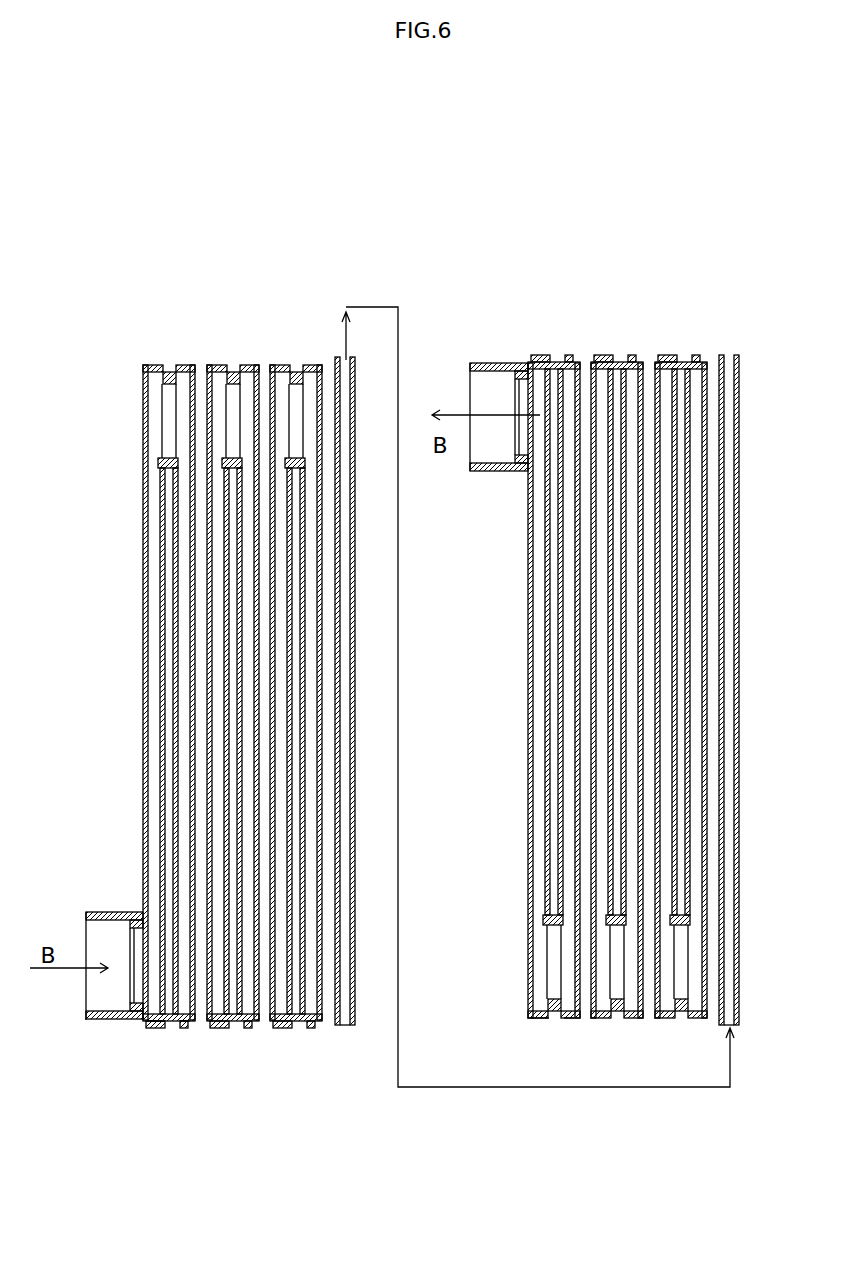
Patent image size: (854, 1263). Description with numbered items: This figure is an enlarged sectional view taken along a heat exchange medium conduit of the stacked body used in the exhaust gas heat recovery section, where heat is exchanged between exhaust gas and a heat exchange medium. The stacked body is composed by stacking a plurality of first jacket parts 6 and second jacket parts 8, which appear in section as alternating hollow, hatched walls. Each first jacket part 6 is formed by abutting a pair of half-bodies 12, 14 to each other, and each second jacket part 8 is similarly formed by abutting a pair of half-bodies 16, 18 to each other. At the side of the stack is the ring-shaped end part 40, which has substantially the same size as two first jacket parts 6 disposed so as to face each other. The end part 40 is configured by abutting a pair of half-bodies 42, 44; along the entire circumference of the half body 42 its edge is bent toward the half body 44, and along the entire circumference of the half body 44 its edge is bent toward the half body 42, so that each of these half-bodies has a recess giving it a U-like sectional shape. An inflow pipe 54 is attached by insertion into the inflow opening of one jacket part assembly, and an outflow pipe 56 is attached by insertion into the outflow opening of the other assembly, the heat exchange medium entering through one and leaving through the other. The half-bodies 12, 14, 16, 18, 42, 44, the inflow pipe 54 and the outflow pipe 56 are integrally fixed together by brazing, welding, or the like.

The first jacket part 6 is at (156, 1042).
The second jacket part 8 is at (201, 1039).
The half-body 12 is at (145, 363).
The half-body 14 is at (167, 363).
The half-body 16 is at (188, 365).
The half-body 18 is at (196, 368).
The end part 40 is at (350, 1042).
The half-body 42 is at (334, 355).
The half-body 44 is at (368, 365).
The inflow pipe 54 is at (110, 1022).
The outflow pipe 56 is at (490, 362).